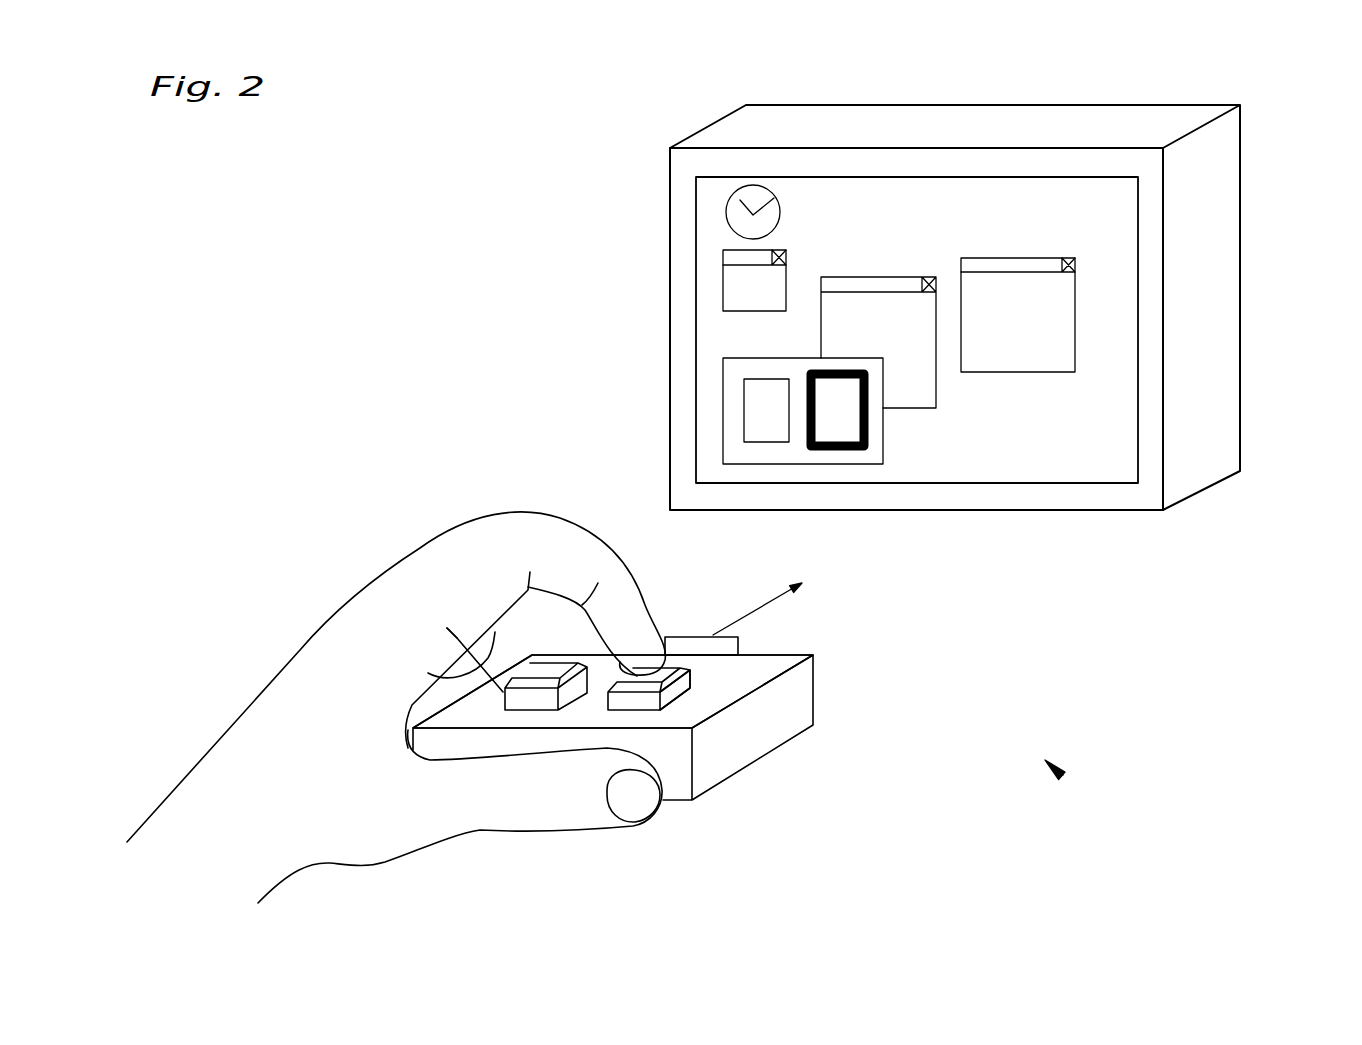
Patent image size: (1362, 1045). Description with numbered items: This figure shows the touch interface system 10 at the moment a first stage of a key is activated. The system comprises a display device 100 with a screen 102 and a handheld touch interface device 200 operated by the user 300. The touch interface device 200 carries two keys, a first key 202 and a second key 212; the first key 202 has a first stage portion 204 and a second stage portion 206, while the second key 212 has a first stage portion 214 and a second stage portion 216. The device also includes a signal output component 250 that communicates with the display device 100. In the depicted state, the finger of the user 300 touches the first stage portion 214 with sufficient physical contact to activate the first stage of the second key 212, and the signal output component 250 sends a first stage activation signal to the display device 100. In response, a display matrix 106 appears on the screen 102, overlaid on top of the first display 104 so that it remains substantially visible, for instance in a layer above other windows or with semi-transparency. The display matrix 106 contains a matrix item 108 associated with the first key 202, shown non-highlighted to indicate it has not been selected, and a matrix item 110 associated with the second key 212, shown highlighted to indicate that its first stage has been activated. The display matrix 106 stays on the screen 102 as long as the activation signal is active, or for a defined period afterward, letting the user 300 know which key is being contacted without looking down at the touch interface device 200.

The touch interface system 10 is at (1063, 775).
The display device 100 is at (1240, 283).
The screen 102 is at (1022, 197).
The first display 104 is at (1058, 432).
The display matrix 106 is at (735, 357).
The matrix item 108 is at (744, 426).
The matrix item 110 is at (845, 452).
The touch interface device 200 is at (718, 787).
The first key 202 is at (407, 712).
The first stage portion 204 is at (530, 655).
The second stage portion 206 is at (457, 638).
The second key 212 is at (645, 712).
The first stage portion 214 is at (700, 643).
The second stage portion 216 is at (690, 676).
The signal output component 250 is at (693, 632).
The user 300 is at (240, 727).